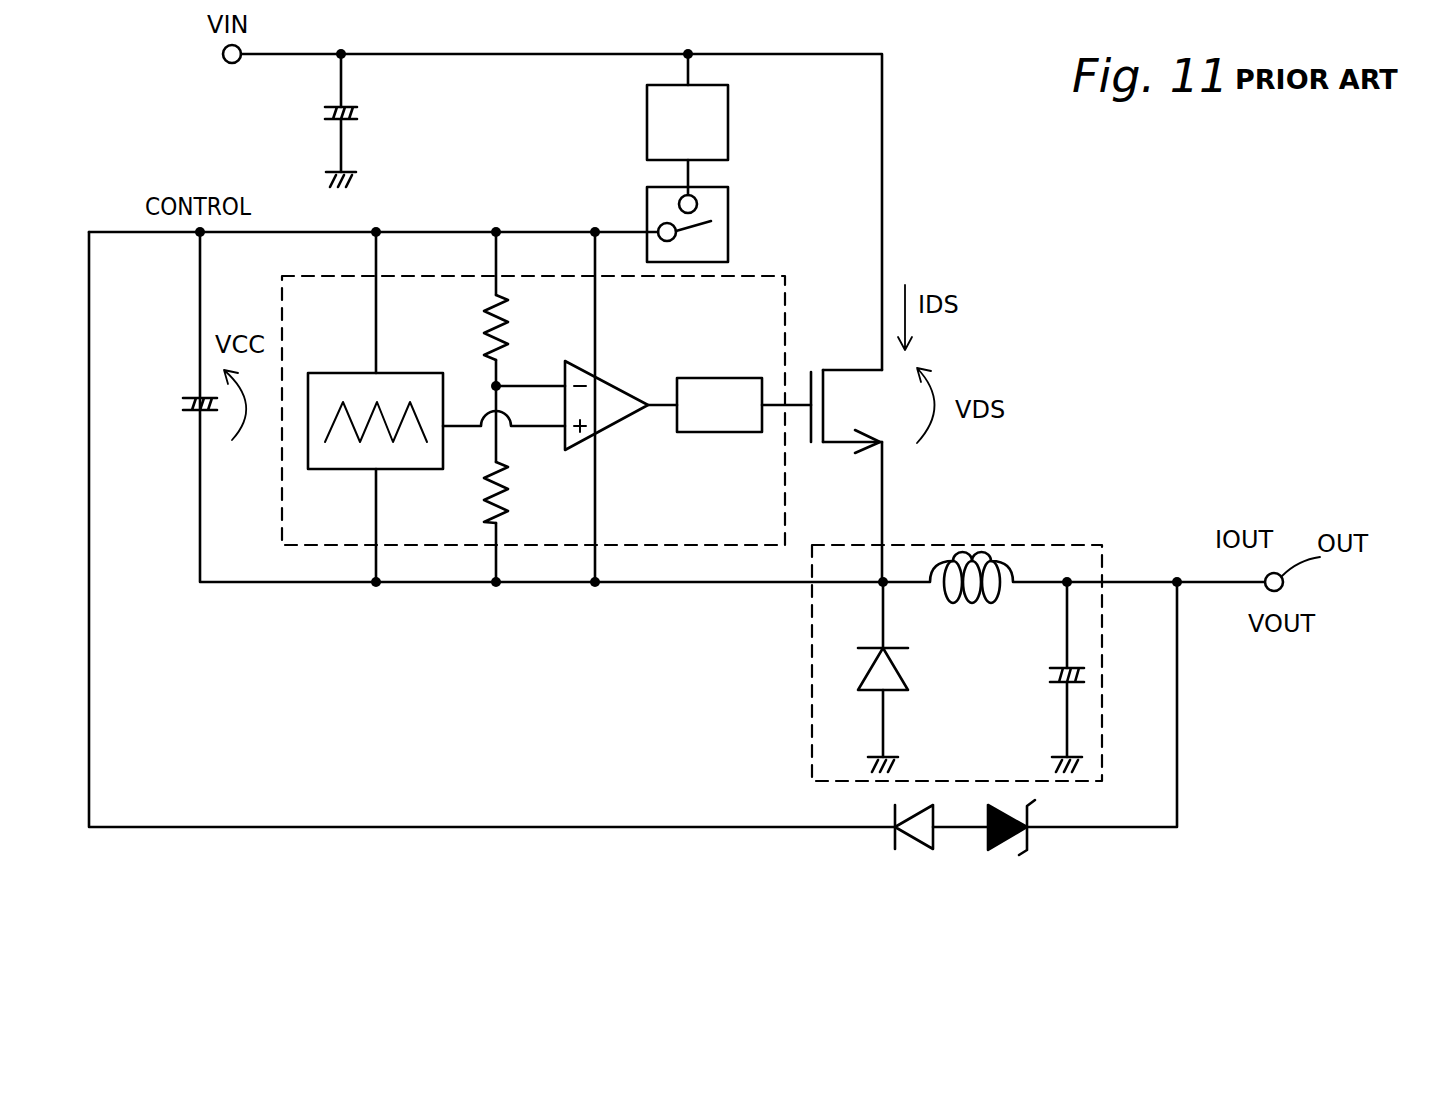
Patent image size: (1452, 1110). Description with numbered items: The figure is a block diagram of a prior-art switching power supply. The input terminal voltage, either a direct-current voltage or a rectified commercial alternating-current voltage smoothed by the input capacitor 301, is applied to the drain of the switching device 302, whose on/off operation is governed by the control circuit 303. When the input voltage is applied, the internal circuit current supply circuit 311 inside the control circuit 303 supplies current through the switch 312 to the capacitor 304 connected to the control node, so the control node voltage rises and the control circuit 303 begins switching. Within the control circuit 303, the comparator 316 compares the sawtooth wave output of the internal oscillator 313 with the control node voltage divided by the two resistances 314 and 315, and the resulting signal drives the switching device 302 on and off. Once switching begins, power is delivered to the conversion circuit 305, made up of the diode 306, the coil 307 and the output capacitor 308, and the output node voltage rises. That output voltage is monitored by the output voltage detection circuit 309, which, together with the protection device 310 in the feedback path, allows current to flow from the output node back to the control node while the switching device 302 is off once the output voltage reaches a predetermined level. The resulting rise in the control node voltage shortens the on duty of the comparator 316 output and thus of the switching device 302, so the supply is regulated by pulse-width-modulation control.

The input capacitor 301 is at (373, 120).
The switching device 302 is at (846, 390).
The control circuit 303 is at (564, 409).
The capacitor 304 is at (178, 387).
The conversion circuit 305 is at (957, 642).
The diode 306 is at (914, 677).
The coil 307 is at (975, 599).
The output capacitor 308 is at (1042, 677).
The output voltage detection circuit 309 is at (941, 850).
The protection device 310 is at (1012, 848).
The internal circuit current supply circuit 311 is at (724, 107).
The switch 312 is at (724, 211).
The internal oscillator 313 is at (436, 438).
The resistance 314 is at (496, 340).
The resistance 315 is at (530, 492).
The comparator 316 is at (688, 413).